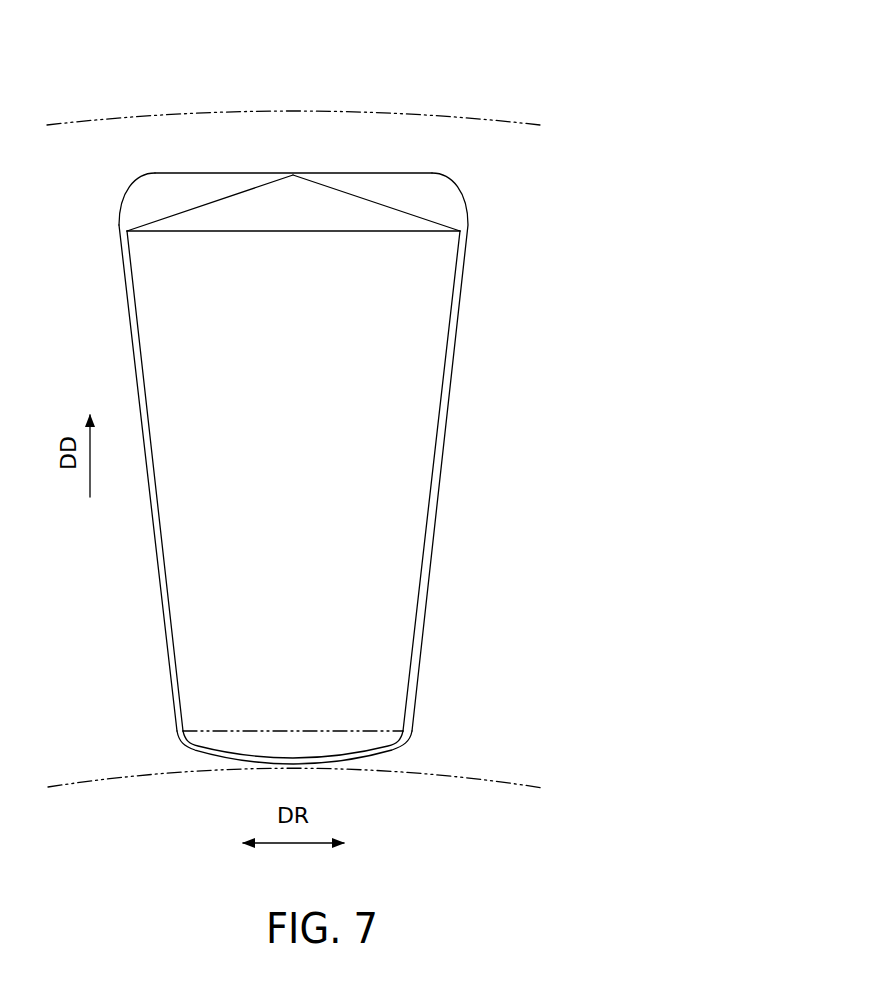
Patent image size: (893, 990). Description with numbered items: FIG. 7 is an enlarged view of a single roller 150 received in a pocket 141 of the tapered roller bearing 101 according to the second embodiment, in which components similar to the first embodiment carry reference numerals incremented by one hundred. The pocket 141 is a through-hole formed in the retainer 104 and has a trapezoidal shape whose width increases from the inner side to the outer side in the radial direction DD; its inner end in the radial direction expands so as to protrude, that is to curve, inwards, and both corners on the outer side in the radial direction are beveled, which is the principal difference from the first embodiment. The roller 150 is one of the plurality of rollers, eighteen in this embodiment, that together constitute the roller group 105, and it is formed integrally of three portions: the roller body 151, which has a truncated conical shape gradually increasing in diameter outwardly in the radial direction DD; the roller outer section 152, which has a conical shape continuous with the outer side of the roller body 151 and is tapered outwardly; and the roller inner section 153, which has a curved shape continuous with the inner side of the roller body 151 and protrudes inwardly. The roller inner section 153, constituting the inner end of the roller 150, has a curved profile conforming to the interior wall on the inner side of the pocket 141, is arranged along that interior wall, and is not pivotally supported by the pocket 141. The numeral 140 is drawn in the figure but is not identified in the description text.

The tapered roller bearing 101 is at (478, 84).
The retainer 104 is at (411, 111).
The roller group 105 is at (480, 246).
The outer cover 140 is at (478, 191).
The pocket 141 is at (131, 194).
The roller 150 is at (341, 186).
The roller body 151 is at (455, 285).
The roller outer section 152 is at (252, 189).
The roller inner section 153 is at (373, 752).